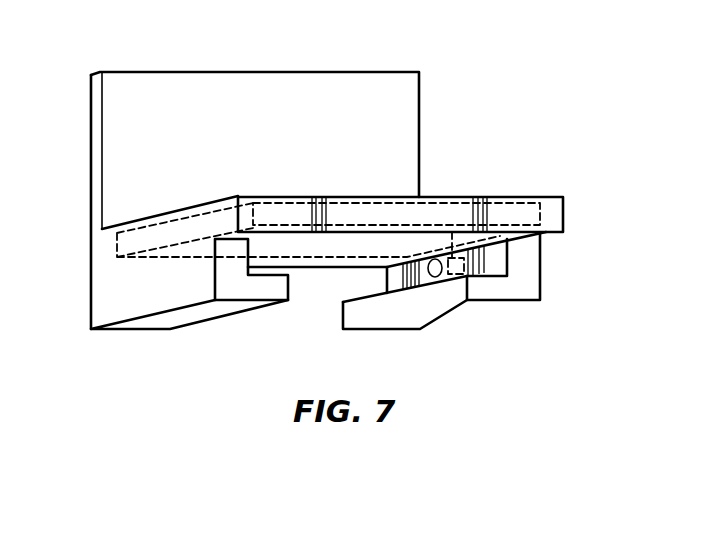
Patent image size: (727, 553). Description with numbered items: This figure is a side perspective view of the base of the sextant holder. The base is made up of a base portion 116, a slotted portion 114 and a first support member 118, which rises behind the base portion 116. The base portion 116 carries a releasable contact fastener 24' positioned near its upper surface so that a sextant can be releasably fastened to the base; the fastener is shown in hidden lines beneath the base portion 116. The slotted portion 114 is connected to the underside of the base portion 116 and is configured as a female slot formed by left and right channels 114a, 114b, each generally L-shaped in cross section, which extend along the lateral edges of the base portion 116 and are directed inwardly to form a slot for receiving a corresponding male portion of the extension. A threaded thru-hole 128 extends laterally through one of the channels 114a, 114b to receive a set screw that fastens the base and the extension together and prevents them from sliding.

The first support member 118 is at (165, 72).
The base portion 116 is at (537, 182).
The threaded thru-hole 128 is at (453, 232).
The releasable contact fastener 24' is at (261, 257).
The slotted portion 114 is at (125, 346).
The left channel 114a is at (268, 289).
The right channel 114b is at (487, 288).